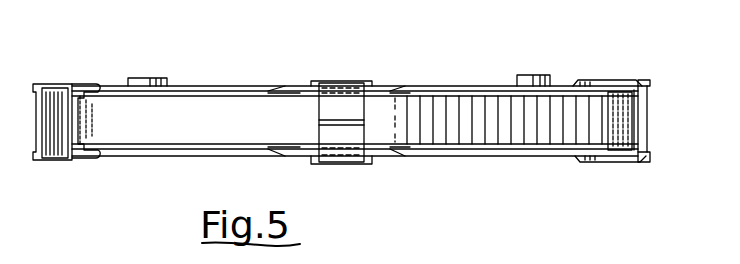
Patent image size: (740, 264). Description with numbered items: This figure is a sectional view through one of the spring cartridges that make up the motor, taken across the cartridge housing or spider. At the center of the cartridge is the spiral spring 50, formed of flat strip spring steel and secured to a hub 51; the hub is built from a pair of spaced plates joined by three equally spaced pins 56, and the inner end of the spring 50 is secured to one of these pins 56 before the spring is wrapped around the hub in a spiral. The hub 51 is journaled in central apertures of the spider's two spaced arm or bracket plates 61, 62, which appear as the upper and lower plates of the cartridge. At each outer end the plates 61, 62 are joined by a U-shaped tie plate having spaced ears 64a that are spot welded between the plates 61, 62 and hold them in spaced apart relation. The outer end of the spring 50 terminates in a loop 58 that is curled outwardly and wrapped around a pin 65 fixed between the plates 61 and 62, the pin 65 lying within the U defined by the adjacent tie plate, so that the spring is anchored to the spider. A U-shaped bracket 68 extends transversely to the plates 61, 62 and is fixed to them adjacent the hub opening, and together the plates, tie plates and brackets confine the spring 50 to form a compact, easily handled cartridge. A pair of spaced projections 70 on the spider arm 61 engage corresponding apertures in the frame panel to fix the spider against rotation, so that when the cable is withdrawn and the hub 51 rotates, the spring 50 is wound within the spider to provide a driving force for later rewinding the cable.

The spiral spring 50 is at (458, 136).
The hub 51 is at (318, 82).
The pins 56 is at (286, 92).
The loop 58 is at (640, 125).
The arm or bracket plate 61 is at (590, 80).
The arm or bracket plate 62 is at (580, 162).
The ears 64a is at (88, 88).
The pin 65 is at (625, 116).
The U-shaped bracket 68 is at (350, 100).
The projections 70 is at (135, 77).